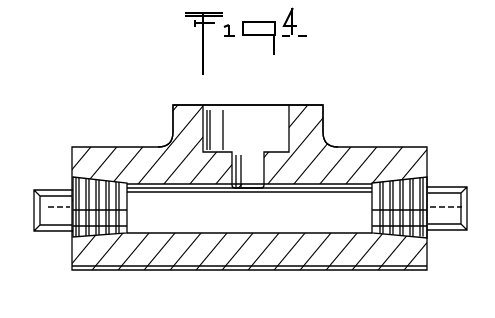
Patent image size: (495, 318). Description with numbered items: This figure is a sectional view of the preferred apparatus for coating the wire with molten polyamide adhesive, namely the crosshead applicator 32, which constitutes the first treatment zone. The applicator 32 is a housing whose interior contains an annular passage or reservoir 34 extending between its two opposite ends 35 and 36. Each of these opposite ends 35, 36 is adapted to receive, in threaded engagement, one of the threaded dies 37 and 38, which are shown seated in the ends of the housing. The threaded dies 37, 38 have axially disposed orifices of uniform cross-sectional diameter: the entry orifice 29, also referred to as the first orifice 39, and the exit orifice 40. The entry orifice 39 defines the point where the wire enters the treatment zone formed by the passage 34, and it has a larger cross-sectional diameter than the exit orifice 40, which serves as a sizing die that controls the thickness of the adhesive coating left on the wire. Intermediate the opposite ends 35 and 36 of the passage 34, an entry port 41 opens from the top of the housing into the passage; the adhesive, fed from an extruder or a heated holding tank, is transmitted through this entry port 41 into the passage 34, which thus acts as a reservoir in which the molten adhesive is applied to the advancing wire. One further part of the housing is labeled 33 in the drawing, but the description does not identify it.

The entry orifice 29 is at (494, 308).
The crosshead applicator 32 is at (244, 287).
The lower wall of housing 33 is at (177, 252).
The annular passage 34 is at (347, 178).
The first end of applicator 35 is at (156, 158).
The second end of applicator 36 is at (388, 182).
The threaded die 37 is at (100, 233).
The threaded die 38 is at (387, 240).
The entry orifice 39 is at (50, 225).
The exit orifice 40 is at (438, 198).
The entry port 41 is at (240, 156).